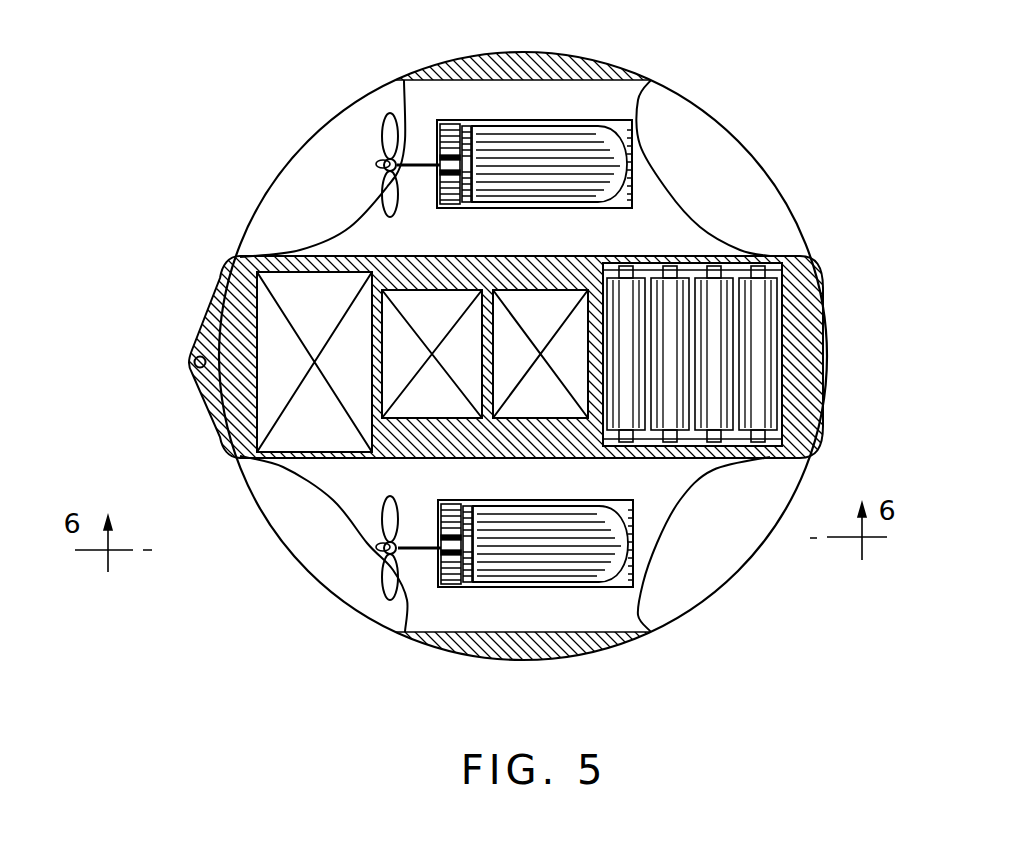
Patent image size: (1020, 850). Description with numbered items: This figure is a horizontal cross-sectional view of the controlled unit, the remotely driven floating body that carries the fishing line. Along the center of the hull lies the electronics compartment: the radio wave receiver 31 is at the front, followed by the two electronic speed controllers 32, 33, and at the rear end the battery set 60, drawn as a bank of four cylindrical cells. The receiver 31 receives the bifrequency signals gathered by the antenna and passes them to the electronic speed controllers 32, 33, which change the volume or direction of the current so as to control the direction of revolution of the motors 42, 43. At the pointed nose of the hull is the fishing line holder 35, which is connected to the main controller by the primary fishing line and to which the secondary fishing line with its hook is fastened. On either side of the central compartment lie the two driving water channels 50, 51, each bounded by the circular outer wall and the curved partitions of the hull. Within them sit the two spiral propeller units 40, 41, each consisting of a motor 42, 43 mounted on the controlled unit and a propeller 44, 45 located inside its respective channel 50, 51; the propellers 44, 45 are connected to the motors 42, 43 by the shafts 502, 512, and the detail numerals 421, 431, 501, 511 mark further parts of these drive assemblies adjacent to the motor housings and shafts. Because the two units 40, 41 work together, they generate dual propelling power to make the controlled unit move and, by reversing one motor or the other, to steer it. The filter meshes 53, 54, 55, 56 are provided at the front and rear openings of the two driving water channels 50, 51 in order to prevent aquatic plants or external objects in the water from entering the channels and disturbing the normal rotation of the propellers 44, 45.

The radio wave receiver 31 is at (298, 288).
The electronic speed controller 32 is at (512, 367).
The electronic speed controller 33 is at (397, 383).
The fishing line holder 35 is at (197, 365).
The spiral propeller unit 40 is at (536, 100).
The spiral propeller unit 41 is at (500, 620).
The motor 42 is at (489, 104).
The motor 43 is at (497, 606).
The propeller 44 is at (378, 115).
The propeller 45 is at (382, 575).
The driving water channel 50 is at (733, 130).
The driving water channel 51 is at (713, 553).
The filter mesh 53 is at (318, 130).
The filter mesh 54 is at (690, 120).
The filter mesh 55 is at (263, 535).
The filter mesh 56 is at (789, 558).
The battery set 60 is at (725, 252).
The upper motor shaft 421 is at (436, 160).
The lower motor shaft 431 is at (421, 555).
The upper motor mount 501 is at (472, 122).
The shaft 502 is at (412, 158).
The lower motor mount 511 is at (617, 590).
The shaft 512 is at (403, 583).